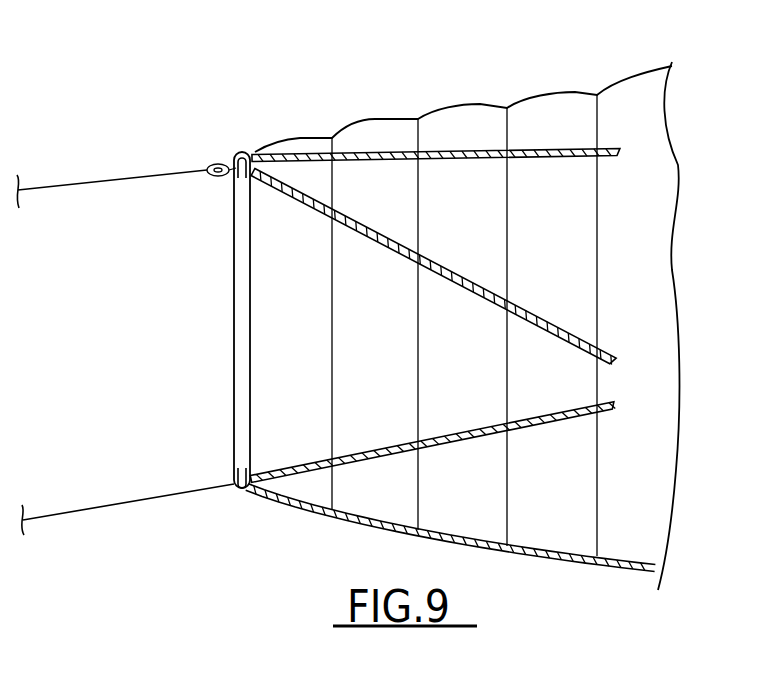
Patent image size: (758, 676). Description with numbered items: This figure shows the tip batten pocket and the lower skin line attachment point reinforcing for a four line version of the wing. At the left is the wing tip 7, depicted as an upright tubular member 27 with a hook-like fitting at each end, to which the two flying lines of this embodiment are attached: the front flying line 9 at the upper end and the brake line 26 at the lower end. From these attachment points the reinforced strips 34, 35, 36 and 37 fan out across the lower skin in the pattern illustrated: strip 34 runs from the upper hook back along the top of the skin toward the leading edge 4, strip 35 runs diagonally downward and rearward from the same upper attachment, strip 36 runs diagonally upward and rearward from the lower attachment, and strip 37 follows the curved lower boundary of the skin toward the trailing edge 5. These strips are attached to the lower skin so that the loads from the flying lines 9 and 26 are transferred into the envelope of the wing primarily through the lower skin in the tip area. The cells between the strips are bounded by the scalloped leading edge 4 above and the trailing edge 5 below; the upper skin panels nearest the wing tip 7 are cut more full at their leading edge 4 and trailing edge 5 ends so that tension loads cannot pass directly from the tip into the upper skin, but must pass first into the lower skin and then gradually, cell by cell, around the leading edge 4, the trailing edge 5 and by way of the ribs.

The leading edge 4 is at (495, 97).
The trailing edge 5 is at (438, 538).
The wing tip 7 is at (198, 320).
The flying line 9 is at (143, 166).
The brake line 26 is at (137, 491).
The tubular sleeve 27 is at (226, 267).
The reinforced strip 34 is at (373, 143).
The reinforced strip 35 is at (376, 251).
The reinforced strip 36 is at (397, 441).
The reinforced strip 37 is at (285, 516).